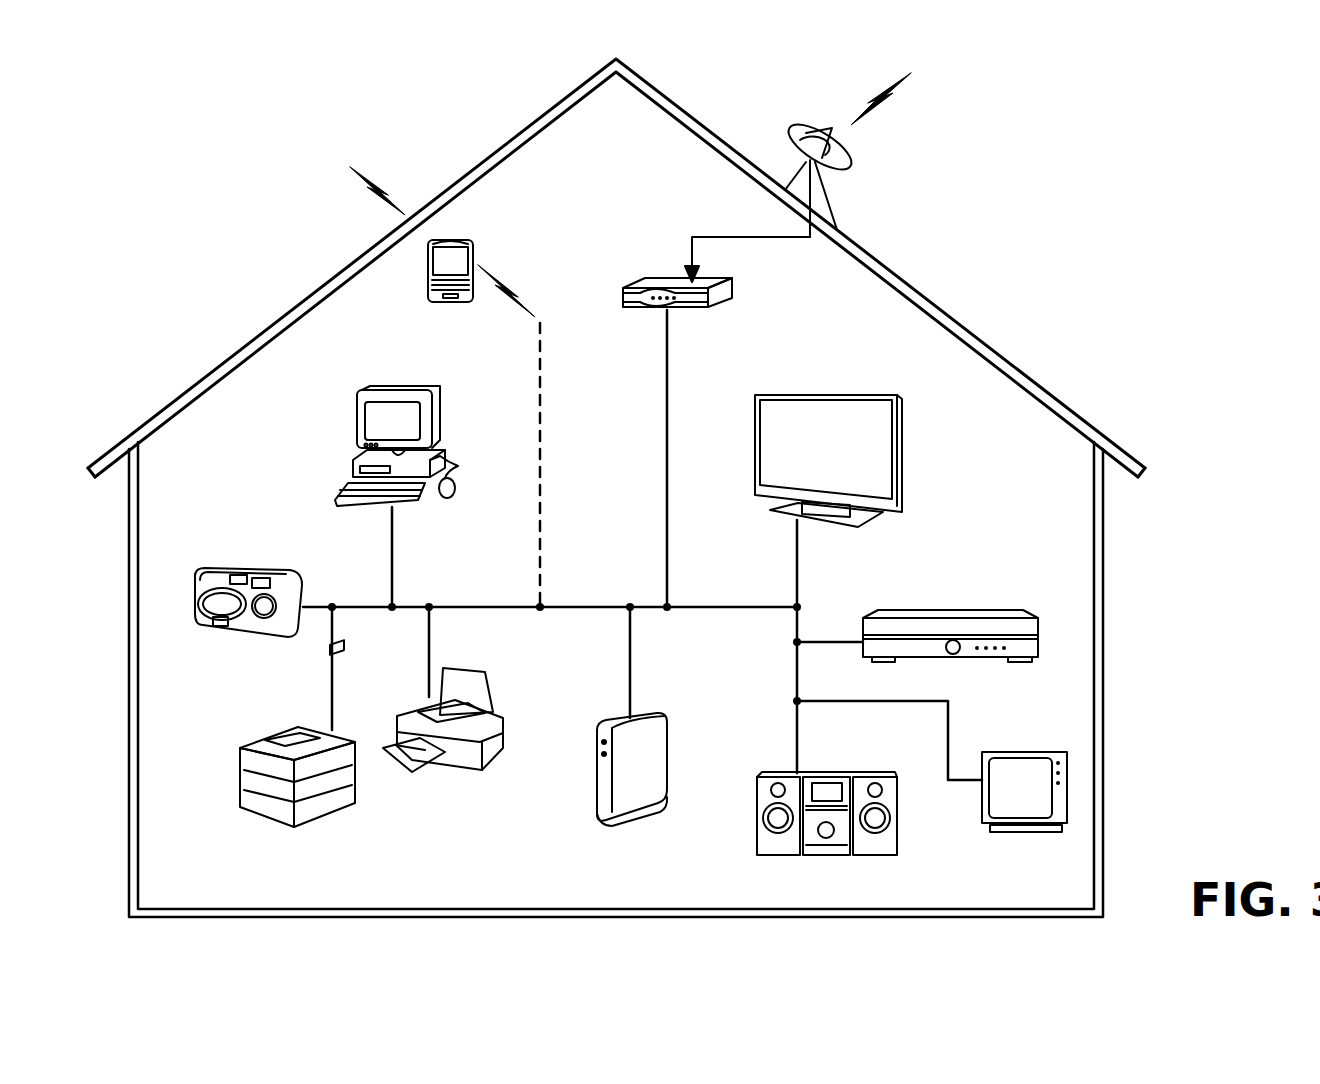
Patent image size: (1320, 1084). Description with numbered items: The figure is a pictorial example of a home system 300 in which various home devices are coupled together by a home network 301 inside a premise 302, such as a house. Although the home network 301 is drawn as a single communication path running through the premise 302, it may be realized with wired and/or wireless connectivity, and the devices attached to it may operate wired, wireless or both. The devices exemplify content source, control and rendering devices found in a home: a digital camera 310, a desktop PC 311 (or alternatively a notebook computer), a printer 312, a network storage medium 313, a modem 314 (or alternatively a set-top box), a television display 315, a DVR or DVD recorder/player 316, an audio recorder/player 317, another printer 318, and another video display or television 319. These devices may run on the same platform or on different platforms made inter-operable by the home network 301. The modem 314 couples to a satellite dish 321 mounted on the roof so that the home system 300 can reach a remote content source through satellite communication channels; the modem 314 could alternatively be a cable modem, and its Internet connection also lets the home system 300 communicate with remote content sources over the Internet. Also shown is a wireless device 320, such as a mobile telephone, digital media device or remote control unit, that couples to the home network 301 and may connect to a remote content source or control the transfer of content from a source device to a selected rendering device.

The home system 300 is at (1042, 222).
The home network 301 is at (498, 612).
The premise 302 is at (1057, 397).
The digital camera 310 is at (220, 637).
The desktop PC 311 is at (380, 388).
The printer 312 is at (404, 705).
The network storage medium 313 is at (632, 824).
The modem 314 is at (735, 293).
The television display 315 is at (902, 480).
The DVR or DVD recorder/player 316 is at (965, 660).
The audio recorder/player 317 is at (880, 770).
The printer 318 is at (308, 823).
The video display 319 is at (1016, 833).
The wireless device 320 is at (428, 272).
The satellite dish 321 is at (855, 165).